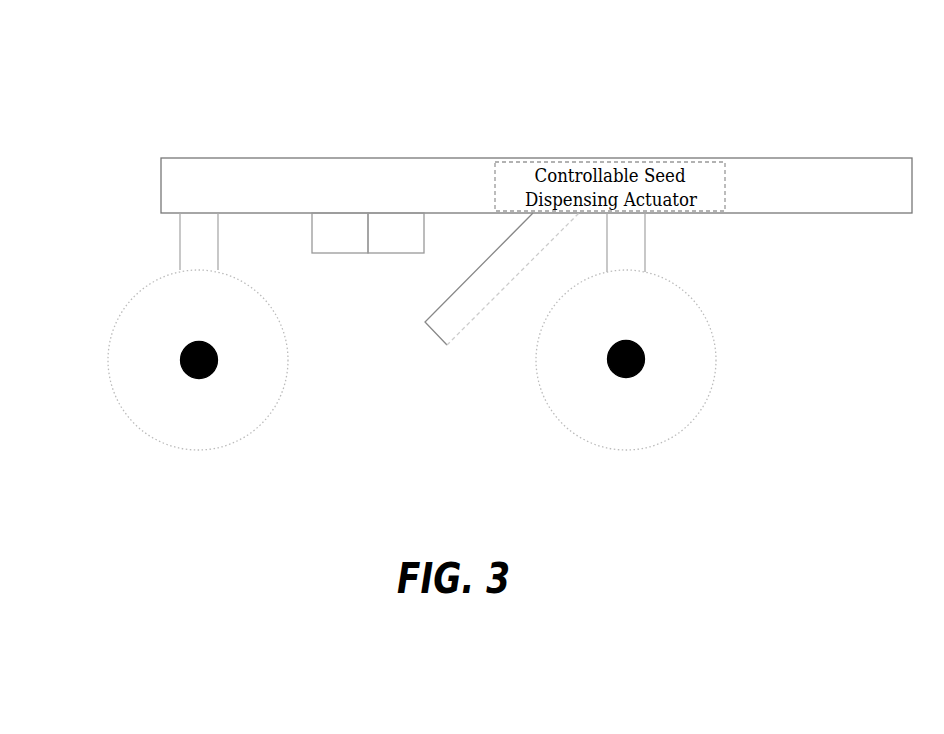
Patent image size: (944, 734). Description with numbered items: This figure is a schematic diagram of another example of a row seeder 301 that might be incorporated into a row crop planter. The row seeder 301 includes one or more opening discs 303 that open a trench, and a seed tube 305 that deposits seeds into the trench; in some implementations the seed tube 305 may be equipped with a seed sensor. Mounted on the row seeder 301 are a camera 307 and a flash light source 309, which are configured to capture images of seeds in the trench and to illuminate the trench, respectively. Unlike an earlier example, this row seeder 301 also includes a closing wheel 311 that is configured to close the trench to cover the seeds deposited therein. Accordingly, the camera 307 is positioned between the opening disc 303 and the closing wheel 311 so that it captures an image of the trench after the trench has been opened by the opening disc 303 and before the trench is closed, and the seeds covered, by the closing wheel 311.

The row seeder 301 is at (125, 130).
The opening disc 303 is at (722, 337).
The seed tube 305 is at (468, 327).
The camera 307 is at (320, 168).
The flash light source 309 is at (397, 168).
The closing wheel 311 is at (132, 317).